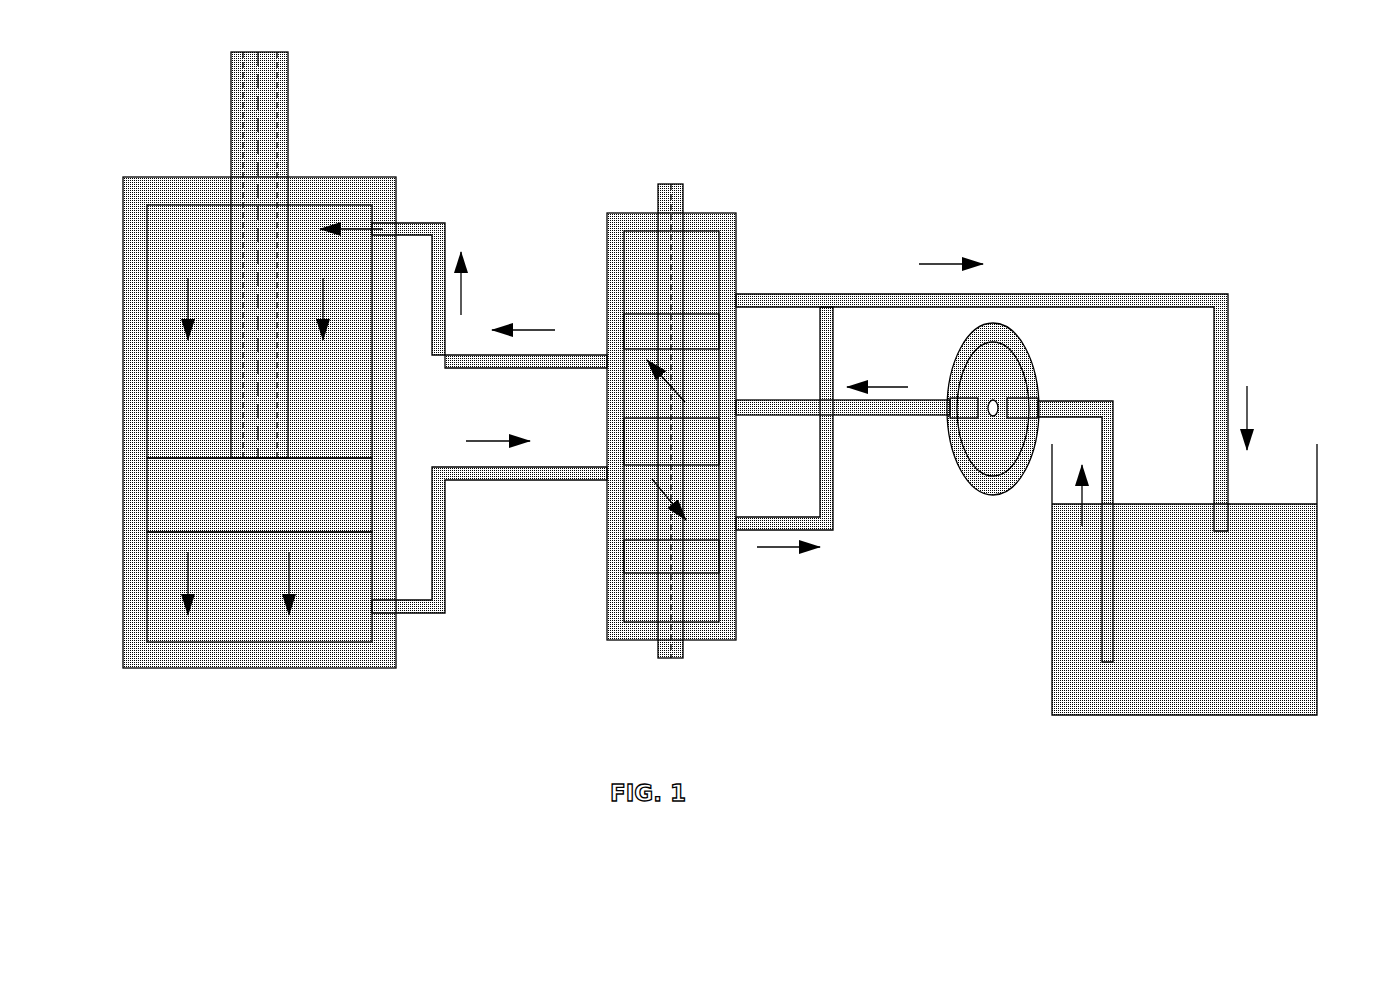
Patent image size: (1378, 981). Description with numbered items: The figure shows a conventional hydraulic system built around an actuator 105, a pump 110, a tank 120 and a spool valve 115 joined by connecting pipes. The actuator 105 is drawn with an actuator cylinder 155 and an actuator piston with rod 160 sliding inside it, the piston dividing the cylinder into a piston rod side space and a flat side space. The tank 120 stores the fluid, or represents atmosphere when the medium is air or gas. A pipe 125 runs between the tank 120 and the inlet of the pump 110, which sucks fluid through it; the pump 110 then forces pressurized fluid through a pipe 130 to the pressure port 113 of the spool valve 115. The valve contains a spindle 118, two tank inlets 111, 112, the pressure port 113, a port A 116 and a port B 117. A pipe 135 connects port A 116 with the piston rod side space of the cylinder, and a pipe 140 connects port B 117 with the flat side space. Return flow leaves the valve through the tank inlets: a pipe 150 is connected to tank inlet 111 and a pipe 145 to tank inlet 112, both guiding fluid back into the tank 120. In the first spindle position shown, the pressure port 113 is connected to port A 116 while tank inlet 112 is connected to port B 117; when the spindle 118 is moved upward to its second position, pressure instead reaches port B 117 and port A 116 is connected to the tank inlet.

The actuator 105 is at (118, 545).
The actuator cylinder 155 is at (225, 648).
The actuator piston with rod 160 is at (289, 107).
The pipe 135 is at (428, 222).
The pipe 140 is at (445, 608).
The spool valve 115 is at (712, 412).
The port A 116 is at (622, 356).
The port B 117 is at (622, 479).
The spindle 118 is at (670, 188).
The tank inlet 111 is at (721, 293).
The pressure port 113 is at (721, 400).
The tank inlet 112 is at (721, 526).
The pipe 130 is at (768, 399).
The pipe 145 is at (833, 510).
The pipe 150 is at (1133, 292).
The pump 110 is at (1039, 376).
The pipe 125 is at (1115, 440).
The tank 120 is at (1317, 617).